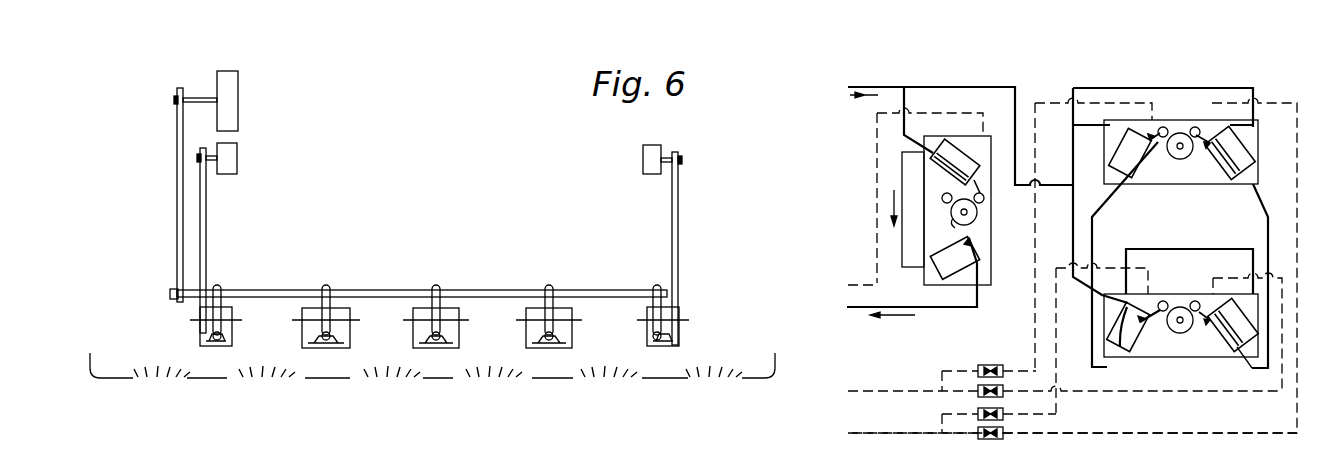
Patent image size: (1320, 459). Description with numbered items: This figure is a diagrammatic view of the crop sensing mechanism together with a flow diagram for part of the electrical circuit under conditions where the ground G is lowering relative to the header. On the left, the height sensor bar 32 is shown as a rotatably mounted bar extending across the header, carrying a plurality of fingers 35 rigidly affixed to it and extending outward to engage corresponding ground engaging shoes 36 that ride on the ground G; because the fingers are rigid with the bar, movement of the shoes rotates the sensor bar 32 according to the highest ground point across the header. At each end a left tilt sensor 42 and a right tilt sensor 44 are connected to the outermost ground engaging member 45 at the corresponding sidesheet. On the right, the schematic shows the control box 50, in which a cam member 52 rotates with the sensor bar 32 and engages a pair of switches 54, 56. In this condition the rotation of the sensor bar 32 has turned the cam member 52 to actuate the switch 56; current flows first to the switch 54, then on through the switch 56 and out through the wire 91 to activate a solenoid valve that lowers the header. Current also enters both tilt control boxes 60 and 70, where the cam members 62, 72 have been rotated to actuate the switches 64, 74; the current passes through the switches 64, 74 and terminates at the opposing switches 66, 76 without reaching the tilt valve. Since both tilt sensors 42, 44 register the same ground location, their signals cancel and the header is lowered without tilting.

The height sensor bar 32 is at (272, 291).
The fingers 35 is at (432, 329).
The ground engaging shoe 36 is at (459, 331).
The left tilt sensor 42 is at (678, 258).
The right tilt sensor 44 is at (206, 233).
The outermost ground engaging member 45 is at (700, 343).
The control box 50 is at (924, 180).
The cam member 52 is at (957, 222).
The switch 54 is at (933, 165).
The switch 56 is at (933, 280).
The control box 60 is at (1183, 380).
The cam member 62 is at (1180, 306).
The switch 64 is at (1130, 343).
The switch 66 is at (1230, 347).
The control box 70 is at (1165, 203).
The cam member 72 is at (1180, 132).
The switch 74 is at (1130, 173).
The switch 76 is at (1232, 177).
The wire 91 is at (852, 308).
The ground G is at (318, 383).